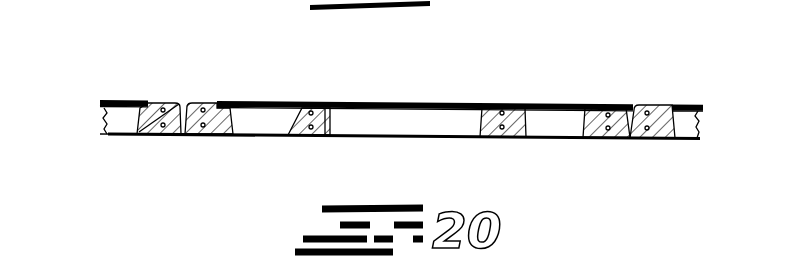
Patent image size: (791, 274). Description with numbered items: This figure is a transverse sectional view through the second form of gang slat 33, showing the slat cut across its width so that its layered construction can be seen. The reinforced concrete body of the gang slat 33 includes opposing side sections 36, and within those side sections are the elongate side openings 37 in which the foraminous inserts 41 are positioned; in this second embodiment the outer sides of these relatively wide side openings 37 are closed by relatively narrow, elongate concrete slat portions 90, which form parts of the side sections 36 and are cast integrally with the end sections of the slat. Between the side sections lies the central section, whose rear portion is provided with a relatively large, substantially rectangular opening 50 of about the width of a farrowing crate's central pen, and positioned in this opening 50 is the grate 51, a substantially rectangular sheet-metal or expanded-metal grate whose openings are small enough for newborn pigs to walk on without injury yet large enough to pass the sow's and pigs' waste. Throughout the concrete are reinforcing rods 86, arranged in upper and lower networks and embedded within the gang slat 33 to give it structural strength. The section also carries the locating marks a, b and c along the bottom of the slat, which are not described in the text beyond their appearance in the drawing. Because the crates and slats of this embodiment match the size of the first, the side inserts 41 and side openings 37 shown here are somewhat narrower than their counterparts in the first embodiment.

The gang slat 33 is at (121, 68).
The foraminous insert 41 is at (108, 100).
The reinforcing rods 86 is at (160, 102).
The concrete slat portions 90 is at (194, 137).
The side sections 36 is at (300, 72).
The elongate side openings 37 is at (272, 136).
The grate 51 is at (406, 102).
The opening 50 is at (480, 137).
The point c is at (100, 164).
The point b is at (393, 160).
The point a is at (669, 159).